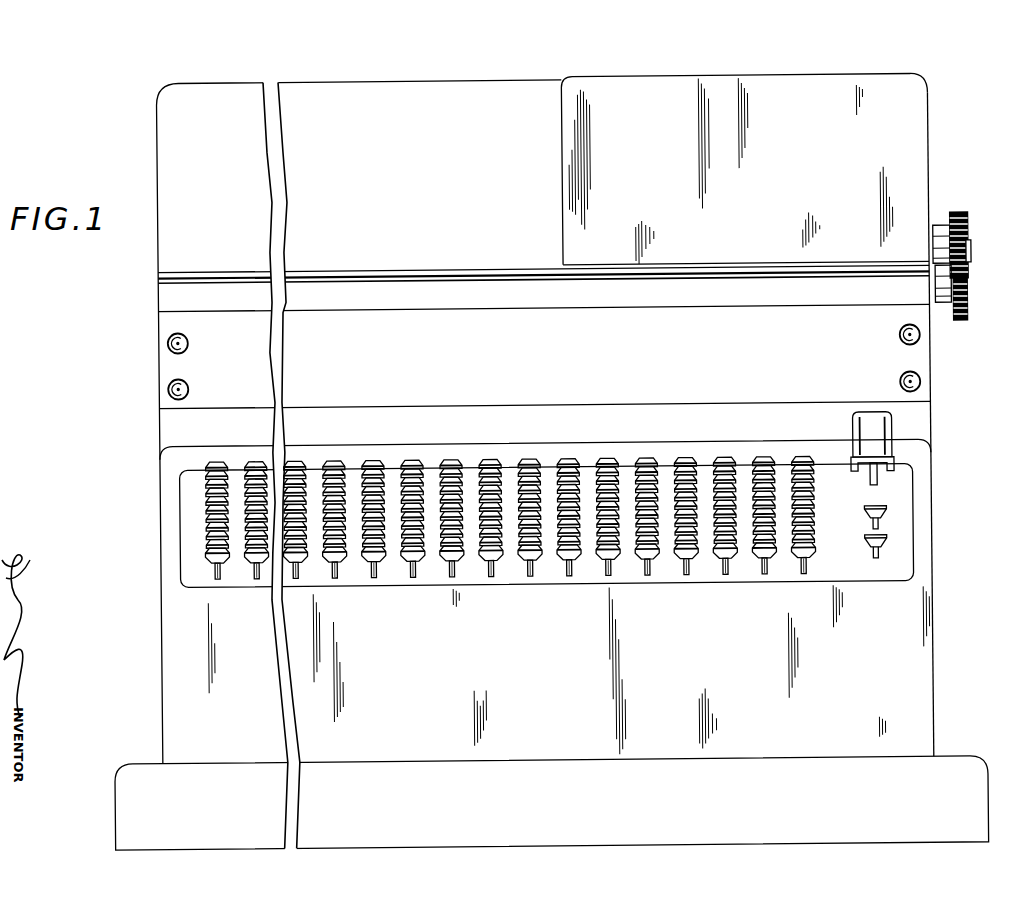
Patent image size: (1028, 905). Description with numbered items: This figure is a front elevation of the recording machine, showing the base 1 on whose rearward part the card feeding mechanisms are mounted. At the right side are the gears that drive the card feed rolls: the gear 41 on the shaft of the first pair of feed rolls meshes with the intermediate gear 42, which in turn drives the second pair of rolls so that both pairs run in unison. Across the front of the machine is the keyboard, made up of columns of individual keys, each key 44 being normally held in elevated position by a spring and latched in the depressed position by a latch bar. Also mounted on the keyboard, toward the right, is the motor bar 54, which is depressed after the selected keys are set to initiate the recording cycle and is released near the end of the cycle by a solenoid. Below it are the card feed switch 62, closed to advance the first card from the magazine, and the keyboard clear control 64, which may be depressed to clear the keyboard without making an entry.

The base 1 is at (144, 771).
The gear 41 is at (970, 312).
The intermediate gear 42 is at (971, 235).
The key 44 is at (685, 459).
The motor bar 54 is at (866, 422).
The card feed switch 62 is at (889, 517).
The keyboard clear key 64 is at (889, 546).